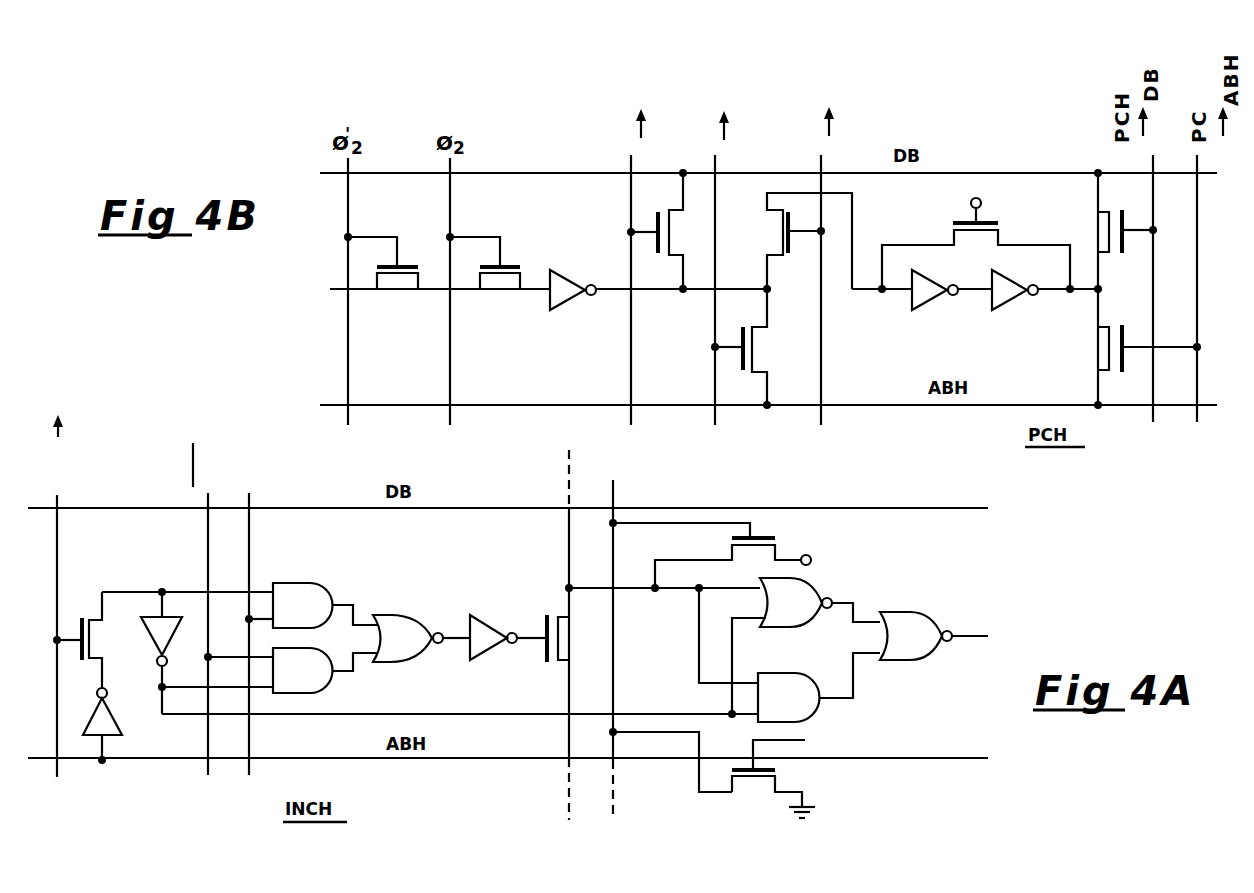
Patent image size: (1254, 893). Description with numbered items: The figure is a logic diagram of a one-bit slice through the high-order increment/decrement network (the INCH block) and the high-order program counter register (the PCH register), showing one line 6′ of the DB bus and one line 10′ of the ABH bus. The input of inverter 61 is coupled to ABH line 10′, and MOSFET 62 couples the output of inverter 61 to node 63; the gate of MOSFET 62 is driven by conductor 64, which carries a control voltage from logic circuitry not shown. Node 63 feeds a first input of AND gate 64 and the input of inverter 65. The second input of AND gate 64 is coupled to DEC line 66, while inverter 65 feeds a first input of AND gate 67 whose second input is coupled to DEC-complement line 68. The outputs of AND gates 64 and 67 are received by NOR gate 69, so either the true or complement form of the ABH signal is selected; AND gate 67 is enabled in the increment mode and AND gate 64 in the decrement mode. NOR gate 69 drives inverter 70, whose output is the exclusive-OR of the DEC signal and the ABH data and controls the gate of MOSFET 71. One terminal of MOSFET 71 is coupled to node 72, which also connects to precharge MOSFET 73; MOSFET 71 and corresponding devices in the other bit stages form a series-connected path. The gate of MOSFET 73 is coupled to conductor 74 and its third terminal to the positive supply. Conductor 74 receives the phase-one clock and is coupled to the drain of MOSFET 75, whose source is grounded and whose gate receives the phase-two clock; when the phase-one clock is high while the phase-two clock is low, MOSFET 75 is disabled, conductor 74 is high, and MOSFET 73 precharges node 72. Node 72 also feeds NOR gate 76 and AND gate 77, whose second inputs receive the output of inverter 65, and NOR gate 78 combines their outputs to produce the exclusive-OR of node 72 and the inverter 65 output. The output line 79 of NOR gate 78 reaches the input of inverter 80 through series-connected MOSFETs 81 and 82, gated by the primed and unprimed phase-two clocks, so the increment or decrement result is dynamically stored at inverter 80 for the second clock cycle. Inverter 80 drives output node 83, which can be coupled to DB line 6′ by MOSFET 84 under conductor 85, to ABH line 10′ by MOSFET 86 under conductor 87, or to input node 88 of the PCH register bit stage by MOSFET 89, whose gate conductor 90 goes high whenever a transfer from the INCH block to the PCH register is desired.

In FIG. 4B, the DB line 6′ is at (330, 173).
In FIG. 4A, the DB line 6′ is at (912, 508).
In FIG. 4B, the ABH line 10′ is at (338, 405).
In FIG. 4A, the ABH line 10′ is at (900, 758).
In FIG. 4A, the inverter 61 is at (108, 738).
In FIG. 4A, the MOSFET 62 is at (118, 636).
In FIG. 4A, the node 63 is at (162, 590).
In FIG. 4A, the AND gate 64 is at (57, 563).
In FIG. 4A, the inverter 65 is at (192, 636).
In FIG. 4A, the DEC line 66 is at (249, 563).
In FIG. 4A, the AND gate 67 is at (322, 691).
In FIG. 4A, the DEC-complement line 68 is at (208, 545).
In FIG. 4A, the NOR gate 69 is at (405, 616).
In FIG. 4A, the inverter 70 is at (478, 658).
In FIG. 4A, the MOSFET 71 is at (563, 642).
In FIG. 4A, the node 72 is at (569, 588).
In FIG. 4A, the precharge MOSFET device 73 is at (735, 546).
In FIG. 4A, the conductor 74 is at (613, 568).
In FIG. 4A, the MOSFET 75 is at (747, 784).
In FIG. 4A, the NOR gate 76 is at (810, 585).
In FIG. 4A, the AND gate 77 is at (788, 672).
In FIG. 4A, the NOR gate 78 is at (903, 612).
In FIG. 4B, the output line 79 is at (338, 290).
In FIG. 4A, the output line 79 is at (983, 641).
In FIG. 4B, the inverter gate 80 is at (583, 297).
In FIG. 4B, the MOSFET 81 is at (398, 283).
In FIG. 4B, the MOSFET 82 is at (497, 283).
In FIG. 4B, the output node 83 is at (683, 295).
In FIG. 4B, the MOSFET 84 is at (671, 208).
In FIG. 4B, the conductor 85 is at (628, 262).
In FIG. 4B, the MOSFET 86 is at (760, 348).
In FIG. 4B, the conductor 87 is at (715, 246).
In FIG. 4B, the input node 88 is at (882, 295).
In FIG. 4B, the MOSFET 89 is at (772, 256).
In FIG. 4B, the conductor 90 is at (827, 373).